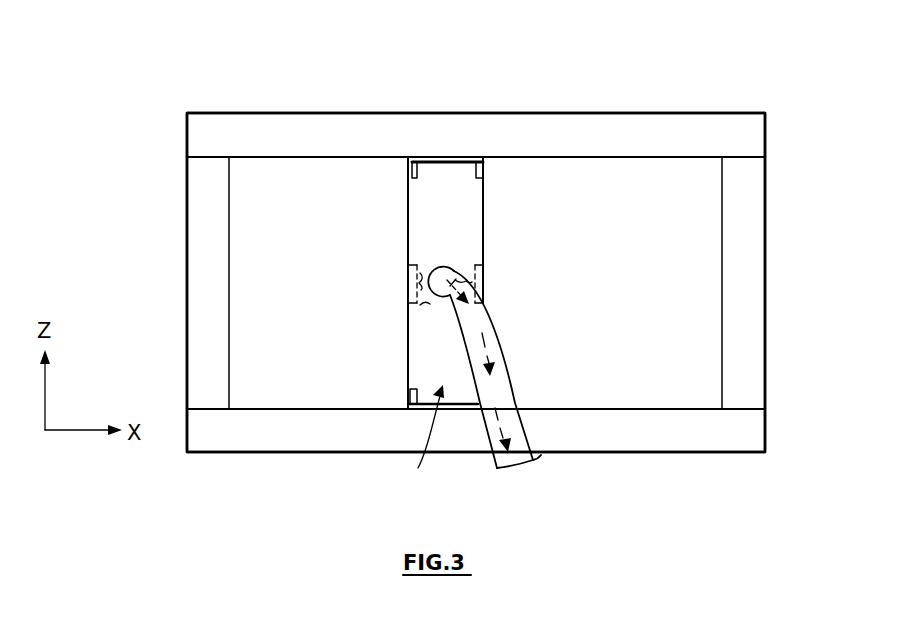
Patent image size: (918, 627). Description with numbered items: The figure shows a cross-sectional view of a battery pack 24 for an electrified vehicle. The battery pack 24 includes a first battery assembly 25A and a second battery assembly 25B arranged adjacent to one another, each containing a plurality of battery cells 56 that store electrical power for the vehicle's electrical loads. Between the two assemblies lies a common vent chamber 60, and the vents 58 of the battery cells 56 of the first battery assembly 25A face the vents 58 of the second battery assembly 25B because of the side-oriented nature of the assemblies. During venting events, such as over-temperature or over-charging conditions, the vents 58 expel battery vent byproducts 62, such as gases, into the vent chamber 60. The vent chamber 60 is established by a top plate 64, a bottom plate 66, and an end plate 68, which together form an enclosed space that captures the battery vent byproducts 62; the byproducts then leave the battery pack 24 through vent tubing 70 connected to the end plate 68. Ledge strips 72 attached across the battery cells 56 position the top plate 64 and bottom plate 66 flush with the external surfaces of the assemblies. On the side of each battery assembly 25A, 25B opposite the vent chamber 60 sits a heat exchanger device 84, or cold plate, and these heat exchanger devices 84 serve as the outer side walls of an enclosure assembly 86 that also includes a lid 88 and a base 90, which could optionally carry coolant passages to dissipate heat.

The battery pack 24 is at (616, 88).
The enclosure assembly 86 is at (776, 138).
The lid 88 is at (697, 135).
The base 90 is at (728, 440).
The heat exchanger device 84 is at (200, 275).
The battery cells 56 is at (335, 272).
The vent chamber 60 is at (460, 247).
The top plate 64 is at (447, 162).
The ledge strips 72 is at (476, 178).
The vents 58 is at (413, 265).
The vent tubing 70 is at (493, 467).
The battery vent byproducts 62 is at (457, 262).
The end plate 68 is at (417, 433).
The bottom plate 66 is at (467, 413).
The first battery assembly 25A is at (296, 398).
The second battery assembly 25B is at (631, 398).